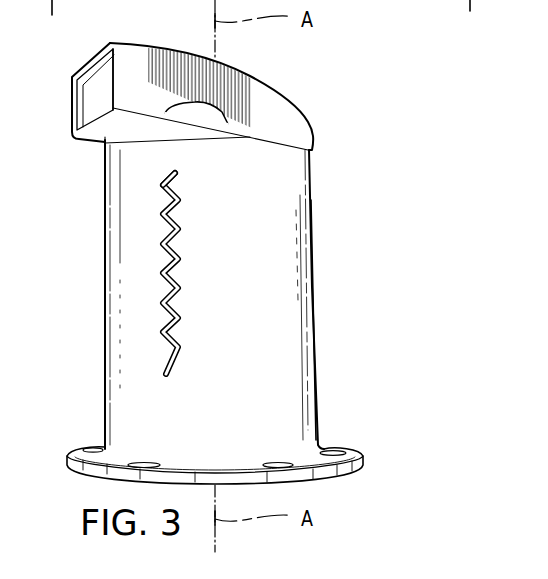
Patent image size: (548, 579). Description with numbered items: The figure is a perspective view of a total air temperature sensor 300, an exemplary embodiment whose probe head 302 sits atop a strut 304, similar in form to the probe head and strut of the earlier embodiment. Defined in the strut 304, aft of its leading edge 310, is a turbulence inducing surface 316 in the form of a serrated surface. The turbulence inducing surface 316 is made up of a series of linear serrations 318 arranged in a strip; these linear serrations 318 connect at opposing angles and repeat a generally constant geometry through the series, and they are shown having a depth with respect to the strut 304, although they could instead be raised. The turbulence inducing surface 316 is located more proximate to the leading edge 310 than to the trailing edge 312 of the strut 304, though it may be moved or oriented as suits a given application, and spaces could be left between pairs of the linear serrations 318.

The total air temperature sensor 300 is at (345, 98).
The head / outlet housing 302 is at (172, 63).
The strut 304 is at (263, 308).
The leading edge 310 is at (106, 362).
The trailing edge 312 is at (318, 395).
The turbulence inducing surface 316 is at (208, 270).
The linear serrations 318 is at (178, 176).